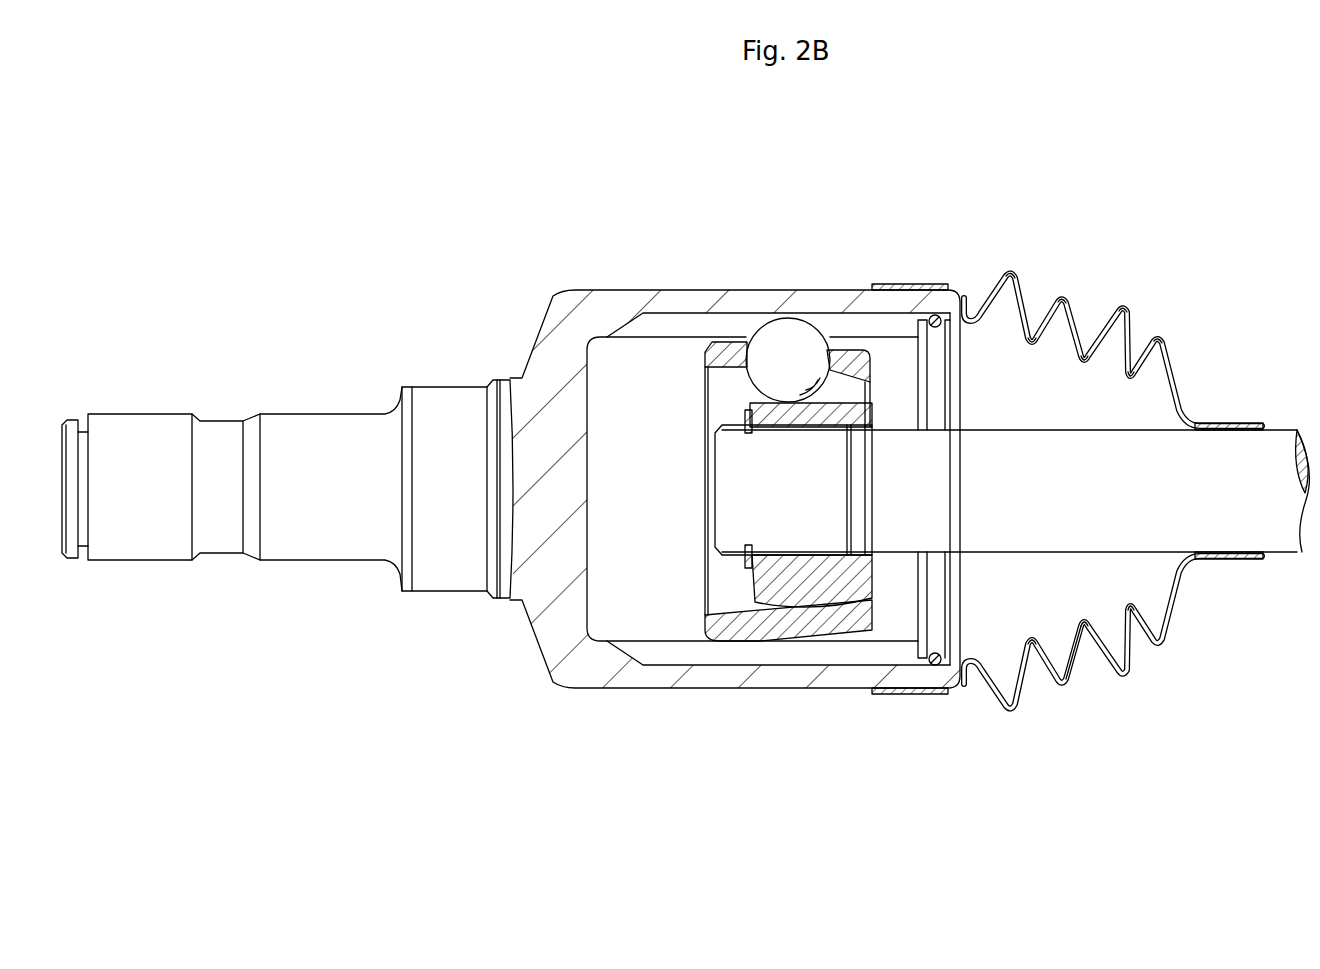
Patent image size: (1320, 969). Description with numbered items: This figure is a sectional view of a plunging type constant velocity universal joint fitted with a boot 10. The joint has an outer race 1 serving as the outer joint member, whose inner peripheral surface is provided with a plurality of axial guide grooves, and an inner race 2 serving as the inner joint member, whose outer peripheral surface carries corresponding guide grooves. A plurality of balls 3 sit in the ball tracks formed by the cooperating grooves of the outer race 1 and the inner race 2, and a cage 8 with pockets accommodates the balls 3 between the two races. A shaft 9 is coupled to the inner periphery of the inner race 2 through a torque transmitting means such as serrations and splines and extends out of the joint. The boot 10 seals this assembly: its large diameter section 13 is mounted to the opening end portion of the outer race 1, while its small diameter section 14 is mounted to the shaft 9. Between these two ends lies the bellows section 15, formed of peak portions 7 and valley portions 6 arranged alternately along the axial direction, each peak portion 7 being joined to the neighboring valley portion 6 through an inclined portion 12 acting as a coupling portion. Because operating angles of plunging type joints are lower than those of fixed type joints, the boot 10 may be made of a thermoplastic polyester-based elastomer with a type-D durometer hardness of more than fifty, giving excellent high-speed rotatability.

The outer race 1 is at (548, 290).
The inner race 2 is at (742, 577).
The balls 3 is at (815, 324).
The valley portions 6 is at (1033, 639).
The peak portions 7 is at (1010, 271).
The cage 8 is at (698, 355).
The shaft 9 is at (1284, 560).
The boot 10 is at (1092, 262).
The inclined portions 12 is at (1013, 320).
The large diameter section 13 is at (907, 283).
The small diameter section 14 is at (1240, 421).
The bellows section 15 is at (1082, 684).